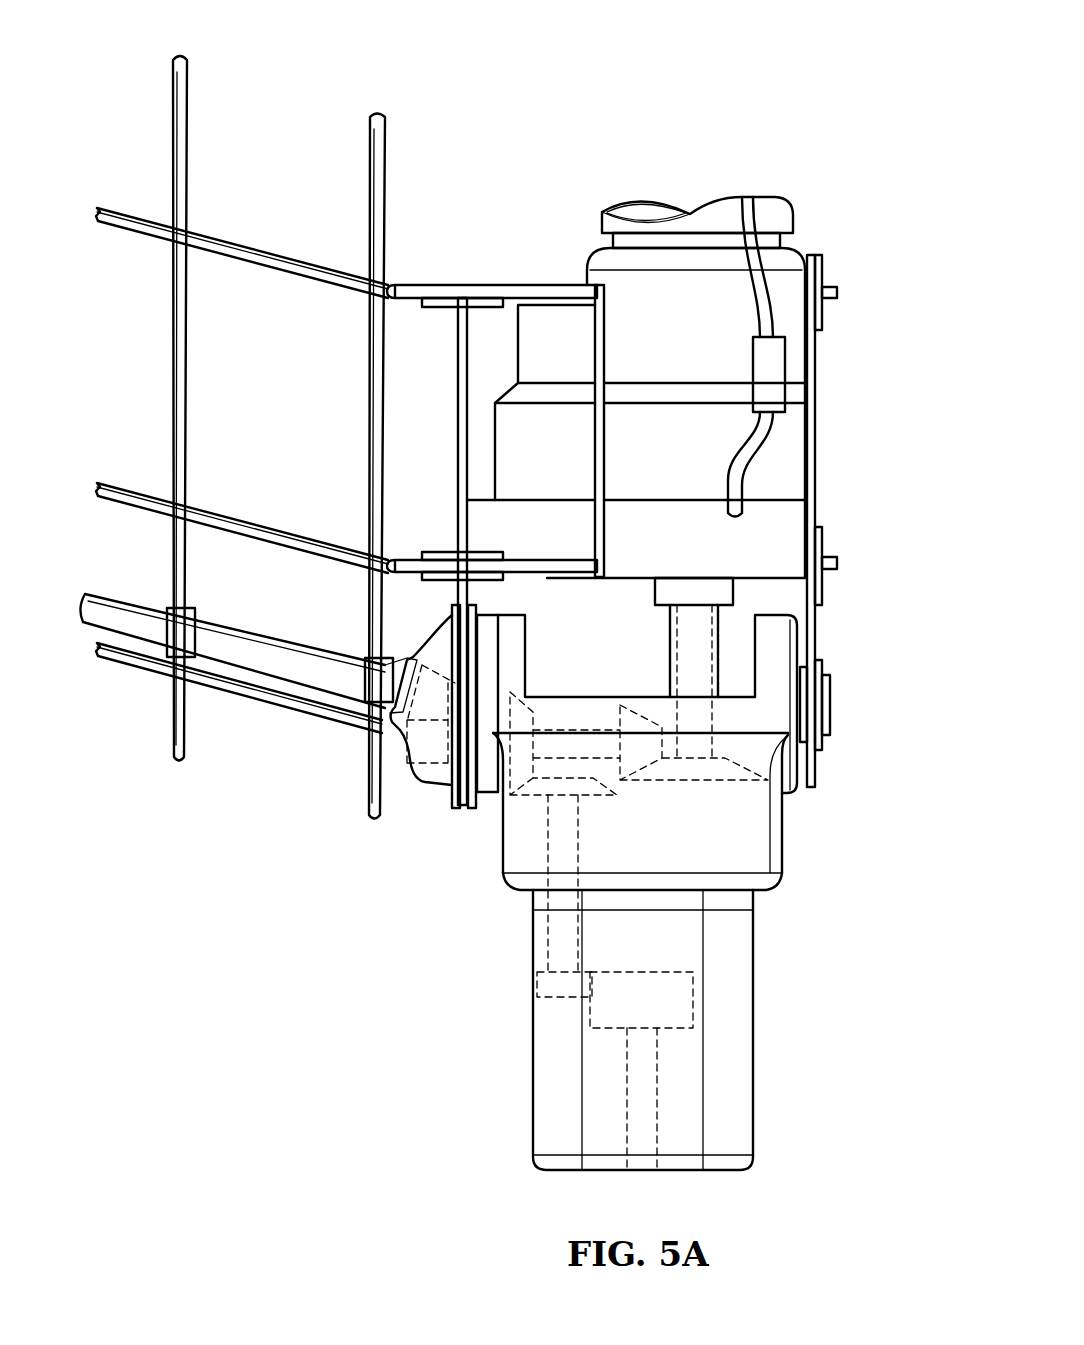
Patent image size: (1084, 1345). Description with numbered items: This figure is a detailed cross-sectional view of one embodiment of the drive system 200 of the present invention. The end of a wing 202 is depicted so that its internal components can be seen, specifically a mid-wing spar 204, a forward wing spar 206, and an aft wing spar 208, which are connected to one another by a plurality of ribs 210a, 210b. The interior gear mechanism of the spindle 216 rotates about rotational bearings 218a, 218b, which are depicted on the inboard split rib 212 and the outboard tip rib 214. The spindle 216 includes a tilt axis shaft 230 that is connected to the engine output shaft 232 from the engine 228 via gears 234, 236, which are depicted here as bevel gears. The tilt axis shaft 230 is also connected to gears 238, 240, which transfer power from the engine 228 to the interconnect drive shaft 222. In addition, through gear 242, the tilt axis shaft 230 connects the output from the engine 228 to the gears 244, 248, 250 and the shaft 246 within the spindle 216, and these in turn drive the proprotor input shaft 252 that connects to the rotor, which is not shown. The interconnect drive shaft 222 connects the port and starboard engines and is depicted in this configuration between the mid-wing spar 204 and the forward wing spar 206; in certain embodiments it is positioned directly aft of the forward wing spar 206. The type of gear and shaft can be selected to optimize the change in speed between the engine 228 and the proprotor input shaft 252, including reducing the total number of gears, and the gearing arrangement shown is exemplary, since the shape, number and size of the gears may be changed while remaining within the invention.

The drive system 200 is at (774, 98).
The wing 202 is at (260, 86).
The mid-wing spar 204 is at (246, 518).
The forward wing spar 206 is at (258, 698).
The aft wing spar 208 is at (264, 252).
The rib 210a is at (368, 428).
The rib 210b is at (172, 372).
The inboard split rib 212 is at (460, 315).
The outboard tip rib 214 is at (818, 490).
The spindle 216 is at (753, 1120).
The rotational bearing 218a is at (832, 705).
The rotational bearing 218b is at (462, 808).
The interconnect drive shaft 222 is at (108, 603).
The engine 228 is at (795, 455).
The tilt axis shaft 230 is at (560, 727).
The engine output shaft 232 is at (712, 724).
The gear 234 is at (707, 785).
The gear 236 is at (650, 722).
The gear 238 is at (438, 785).
The gear 240 is at (428, 652).
The gear 242 is at (497, 690).
The gear 244 is at (598, 790).
The shaft 246 is at (548, 925).
The gear 248 is at (553, 1000).
The gear 250 is at (698, 1003).
The proprotor input shaft 252 is at (625, 1140).